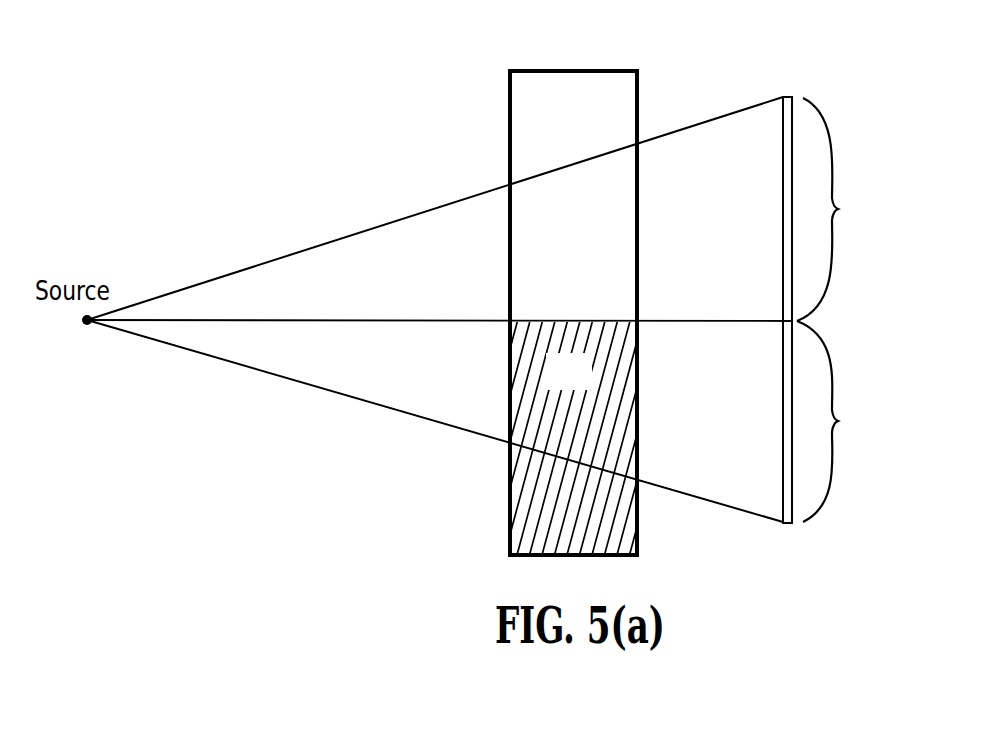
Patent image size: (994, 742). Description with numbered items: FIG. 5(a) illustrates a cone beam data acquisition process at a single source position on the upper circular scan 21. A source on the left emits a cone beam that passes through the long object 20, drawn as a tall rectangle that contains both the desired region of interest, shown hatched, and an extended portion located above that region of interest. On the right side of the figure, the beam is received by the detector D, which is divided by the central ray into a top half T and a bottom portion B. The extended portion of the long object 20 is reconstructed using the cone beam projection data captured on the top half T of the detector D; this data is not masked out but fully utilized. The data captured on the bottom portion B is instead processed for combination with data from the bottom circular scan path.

The long object 20 is at (642, 96).
The upper circular scan 21 is at (350, 322).
The detector D is at (788, 95).
The top half of the detector T is at (832, 209).
The bottom portion of the detector B is at (832, 421).